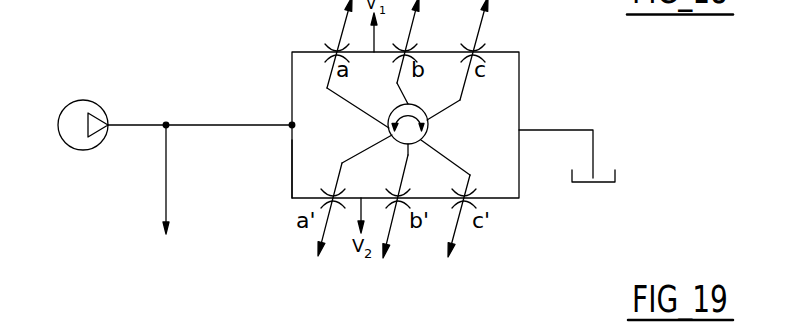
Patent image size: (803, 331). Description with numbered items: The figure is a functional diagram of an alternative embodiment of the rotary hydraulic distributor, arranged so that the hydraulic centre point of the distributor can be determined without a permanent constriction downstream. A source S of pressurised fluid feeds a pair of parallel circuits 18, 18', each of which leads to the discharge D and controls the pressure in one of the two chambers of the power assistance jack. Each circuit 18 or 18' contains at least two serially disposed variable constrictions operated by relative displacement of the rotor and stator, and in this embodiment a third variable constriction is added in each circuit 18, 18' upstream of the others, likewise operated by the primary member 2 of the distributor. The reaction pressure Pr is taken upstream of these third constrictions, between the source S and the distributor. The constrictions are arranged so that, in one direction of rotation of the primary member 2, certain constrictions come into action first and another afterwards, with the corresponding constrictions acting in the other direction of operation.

The primary rotary member 2 is at (427, 131).
The parallel circuit 18 is at (382, 125).
The parallel circuit 18' is at (266, 169).
The source of pressurised fluid S is at (83, 110).
The reaction pressure Pr is at (149, 186).
The discharge D is at (567, 171).